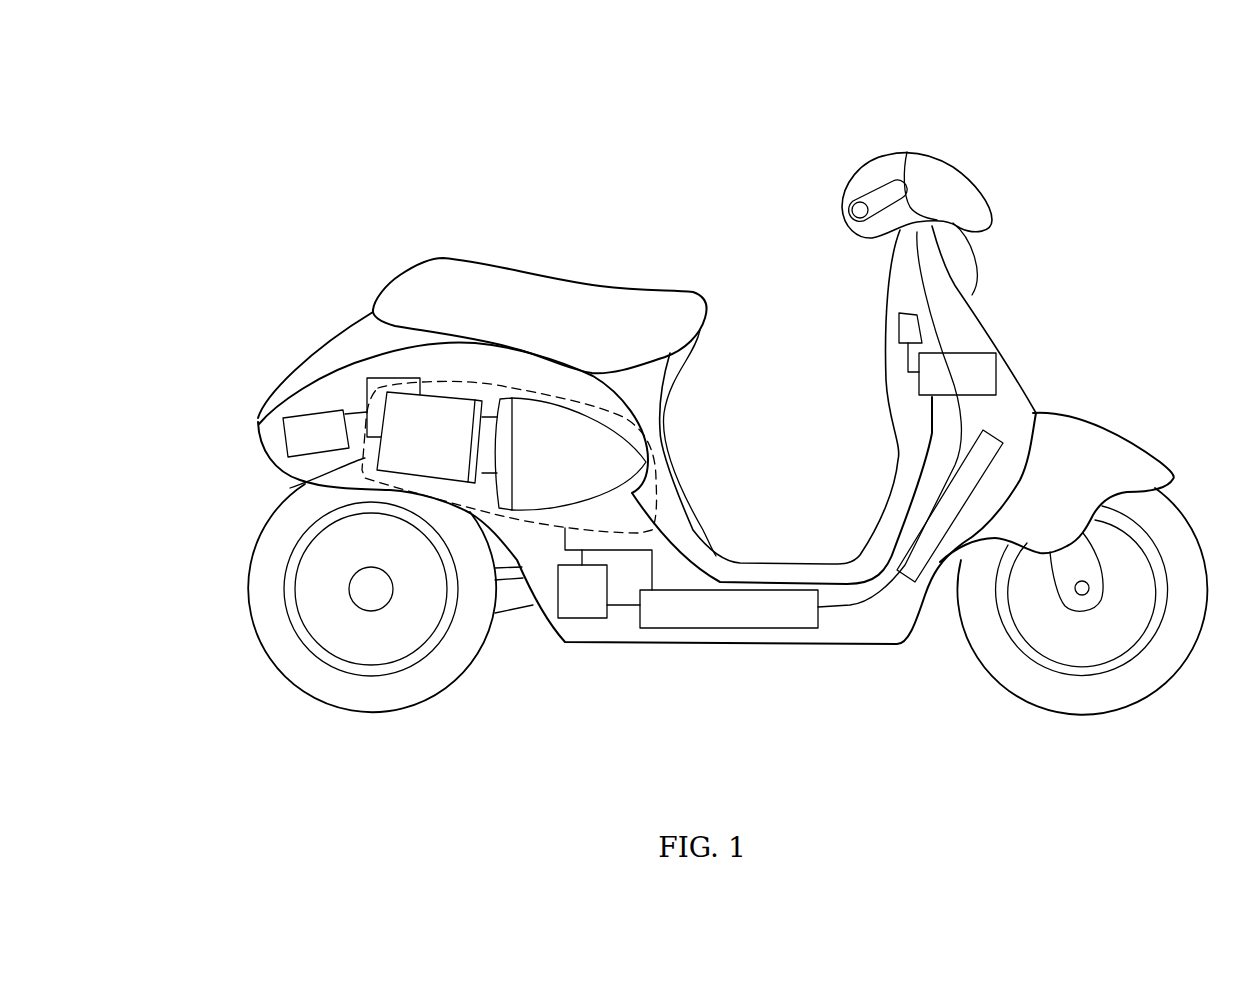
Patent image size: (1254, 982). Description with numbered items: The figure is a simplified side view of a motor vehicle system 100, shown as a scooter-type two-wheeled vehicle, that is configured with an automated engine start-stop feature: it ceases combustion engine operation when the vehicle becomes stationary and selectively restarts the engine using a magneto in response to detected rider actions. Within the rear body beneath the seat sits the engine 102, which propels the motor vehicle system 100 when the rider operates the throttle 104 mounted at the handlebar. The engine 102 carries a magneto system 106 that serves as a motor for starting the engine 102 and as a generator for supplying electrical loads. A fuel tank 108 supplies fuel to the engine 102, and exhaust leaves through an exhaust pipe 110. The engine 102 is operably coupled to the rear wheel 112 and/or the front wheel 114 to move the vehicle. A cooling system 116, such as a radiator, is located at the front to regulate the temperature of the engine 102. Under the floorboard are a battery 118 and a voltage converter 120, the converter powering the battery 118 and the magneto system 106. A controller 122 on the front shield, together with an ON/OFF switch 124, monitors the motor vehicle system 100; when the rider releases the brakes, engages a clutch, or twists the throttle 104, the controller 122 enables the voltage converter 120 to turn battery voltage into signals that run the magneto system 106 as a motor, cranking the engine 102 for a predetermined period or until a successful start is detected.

The motor vehicle system 100 is at (716, 433).
The engine 102 is at (610, 437).
The throttle 104 is at (857, 192).
The magneto system 106 is at (593, 478).
The fuel tank 108 is at (282, 430).
The exhaust pipe 110 is at (290, 488).
The rear wheels 112 is at (302, 690).
The front wheels 114 is at (1157, 693).
The cooling system 116 is at (1002, 440).
The battery 118 is at (727, 615).
The voltage converter 120 is at (573, 605).
The controller 122 is at (990, 372).
The ON/OFF switch 124 is at (913, 330).